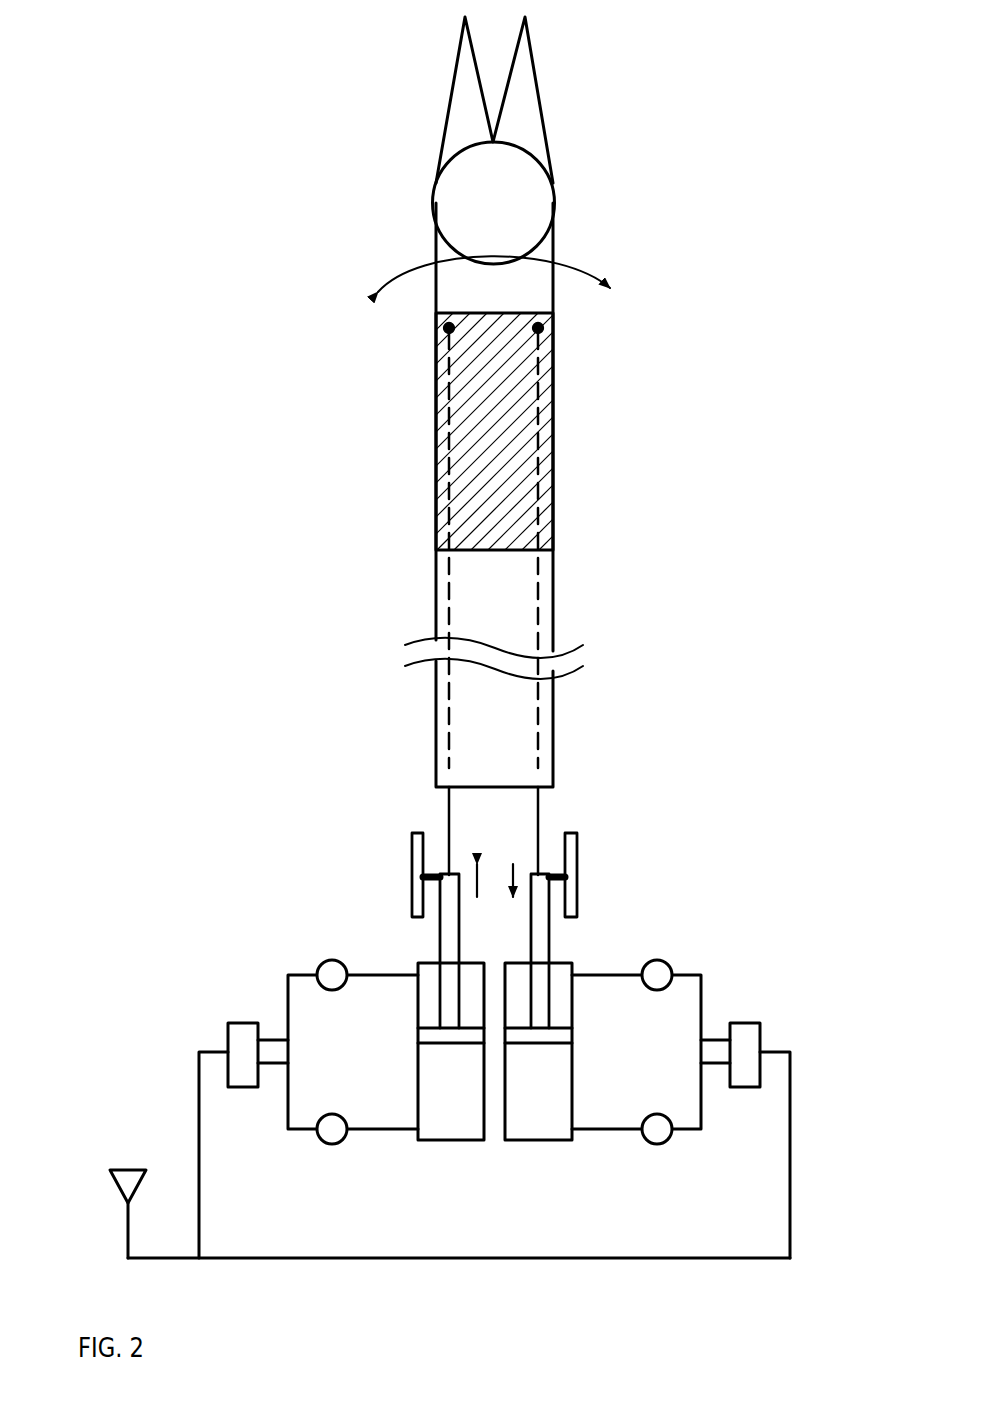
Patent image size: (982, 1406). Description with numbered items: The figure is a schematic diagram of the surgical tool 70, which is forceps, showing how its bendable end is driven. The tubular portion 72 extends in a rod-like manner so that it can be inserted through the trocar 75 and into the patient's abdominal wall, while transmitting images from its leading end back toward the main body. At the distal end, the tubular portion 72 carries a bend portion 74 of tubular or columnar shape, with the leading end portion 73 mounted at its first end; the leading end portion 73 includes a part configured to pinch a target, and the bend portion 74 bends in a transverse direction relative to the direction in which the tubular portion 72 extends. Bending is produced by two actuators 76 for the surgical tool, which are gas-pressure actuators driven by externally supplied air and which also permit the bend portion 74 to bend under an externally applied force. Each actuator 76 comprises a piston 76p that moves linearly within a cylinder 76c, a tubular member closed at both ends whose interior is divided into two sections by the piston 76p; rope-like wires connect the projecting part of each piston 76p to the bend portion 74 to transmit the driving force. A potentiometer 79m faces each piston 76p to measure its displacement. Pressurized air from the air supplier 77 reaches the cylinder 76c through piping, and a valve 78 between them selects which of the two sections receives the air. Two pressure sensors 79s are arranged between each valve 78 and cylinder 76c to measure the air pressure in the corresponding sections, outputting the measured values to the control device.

The surgical tool 70 is at (228, 224).
The tubular portion 72 is at (555, 595).
The leading end portion 73 is at (555, 205).
The bend portion 74 is at (555, 443).
The trocar 75 is at (449, 738).
The actuator for the surgical tool 76 is at (402, 1052).
The piston 76p is at (440, 938).
The cylinder 76c is at (450, 1142).
The air supplier 77 is at (128, 1168).
The valve 78 is at (243, 1090).
The potentiometer 79m is at (412, 850).
The pressure sensor 79s is at (322, 961).